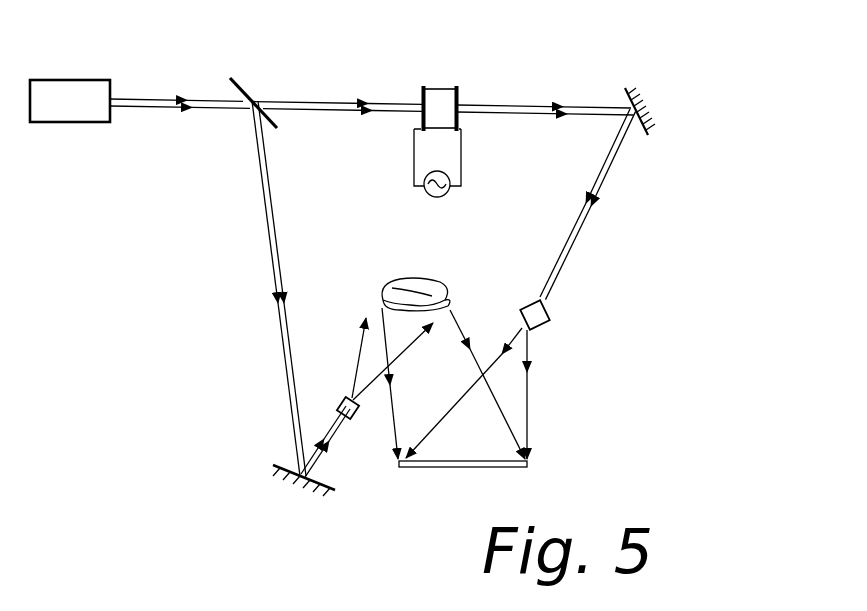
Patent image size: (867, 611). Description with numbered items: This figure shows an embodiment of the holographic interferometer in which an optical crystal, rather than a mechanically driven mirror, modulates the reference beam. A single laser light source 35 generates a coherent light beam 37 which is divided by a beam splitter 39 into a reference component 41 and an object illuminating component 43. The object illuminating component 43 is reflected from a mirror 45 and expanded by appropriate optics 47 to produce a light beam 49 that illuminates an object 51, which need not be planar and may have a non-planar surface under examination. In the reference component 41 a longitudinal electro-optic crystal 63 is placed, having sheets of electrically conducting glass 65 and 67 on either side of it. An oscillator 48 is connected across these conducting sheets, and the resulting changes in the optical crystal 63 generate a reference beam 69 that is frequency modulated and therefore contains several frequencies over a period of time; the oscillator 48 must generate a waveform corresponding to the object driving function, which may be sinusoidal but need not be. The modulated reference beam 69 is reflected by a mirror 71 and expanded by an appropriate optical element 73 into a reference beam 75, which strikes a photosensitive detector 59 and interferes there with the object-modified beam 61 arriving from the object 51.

The laser light source 35 is at (48, 87).
The coherent light beam 37 is at (137, 98).
The beam splitter 39 is at (233, 85).
The reference component 41 is at (297, 106).
The object illuminating component 43 is at (272, 225).
The mirror 45 is at (330, 487).
The optics 47 is at (367, 400).
The oscillator 48 is at (439, 198).
The light beam 49 is at (366, 354).
The object 51 is at (410, 280).
The photosensitive detector 59 is at (500, 468).
The object-modified beam 61 is at (394, 424).
The electro-optic crystal 63 is at (439, 92).
The sheet of electrically conducting glass 65 is at (421, 93).
The sheet of electrically conducting glass 67 is at (458, 93).
The reference beam 69 is at (512, 105).
The mirror 71 is at (645, 126).
The optical element 73 is at (545, 318).
The reference beam 75 is at (520, 398).